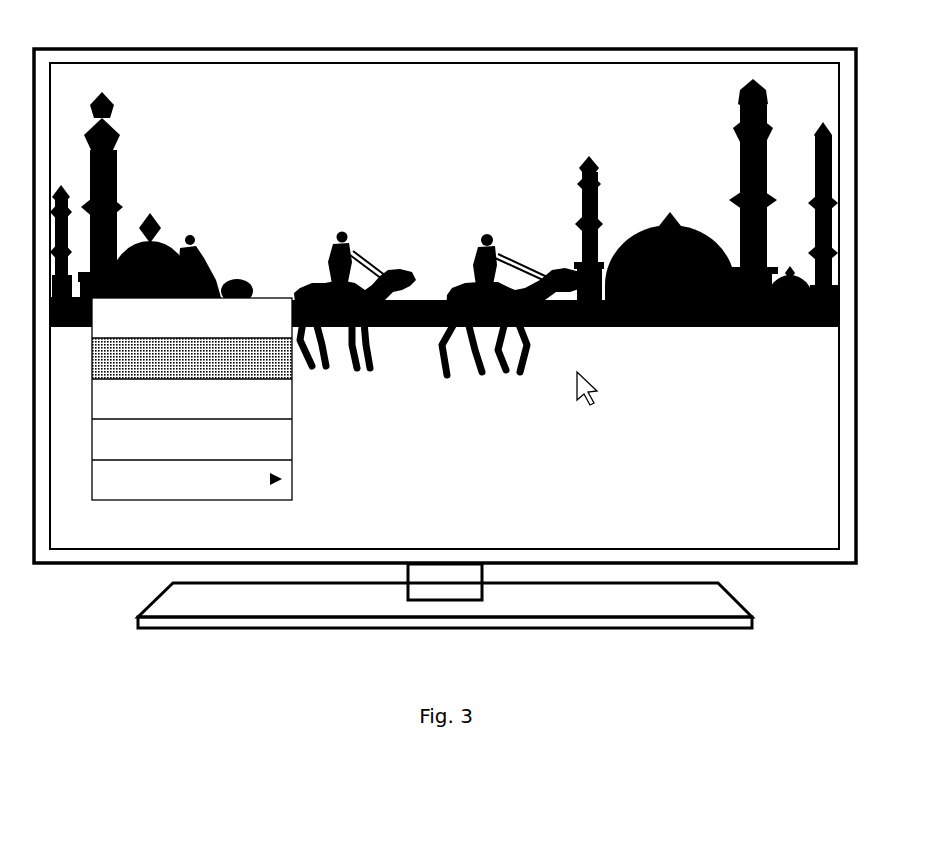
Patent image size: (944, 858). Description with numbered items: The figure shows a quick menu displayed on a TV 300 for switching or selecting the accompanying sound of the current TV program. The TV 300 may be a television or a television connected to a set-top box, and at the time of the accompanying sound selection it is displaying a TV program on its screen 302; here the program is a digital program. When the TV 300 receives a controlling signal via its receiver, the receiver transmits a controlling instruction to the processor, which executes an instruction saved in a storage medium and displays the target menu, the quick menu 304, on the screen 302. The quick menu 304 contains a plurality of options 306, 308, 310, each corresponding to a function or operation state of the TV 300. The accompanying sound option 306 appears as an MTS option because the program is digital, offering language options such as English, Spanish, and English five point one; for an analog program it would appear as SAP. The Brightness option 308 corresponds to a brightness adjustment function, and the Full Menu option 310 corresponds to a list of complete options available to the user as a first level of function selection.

The TV 300 is at (777, 34).
The screen 302 is at (444, 306).
The quick menu 304 is at (263, 297).
The accompanying sound option 306 is at (275, 360).
The Brightness option 308 is at (268, 432).
The Full Menu option 310 is at (283, 481).